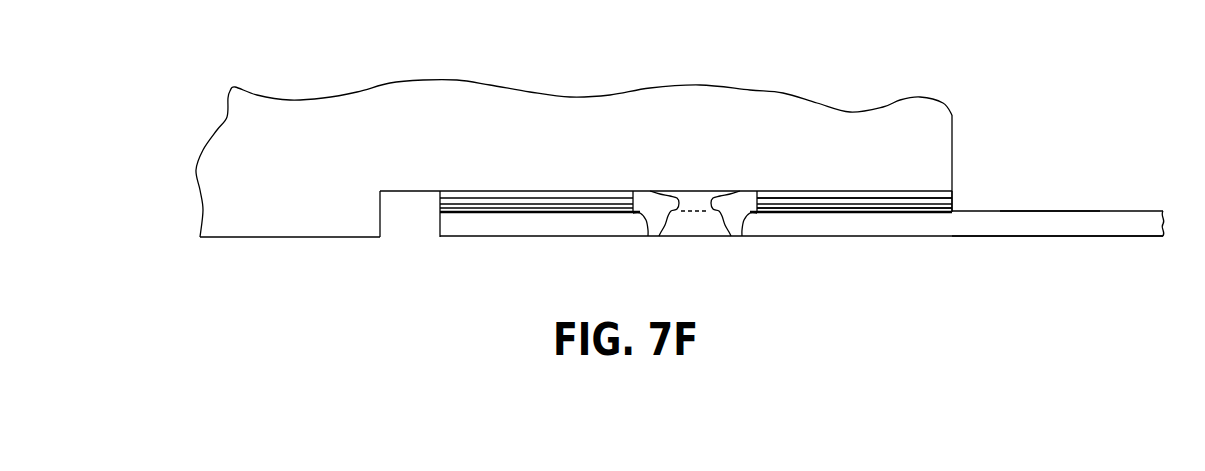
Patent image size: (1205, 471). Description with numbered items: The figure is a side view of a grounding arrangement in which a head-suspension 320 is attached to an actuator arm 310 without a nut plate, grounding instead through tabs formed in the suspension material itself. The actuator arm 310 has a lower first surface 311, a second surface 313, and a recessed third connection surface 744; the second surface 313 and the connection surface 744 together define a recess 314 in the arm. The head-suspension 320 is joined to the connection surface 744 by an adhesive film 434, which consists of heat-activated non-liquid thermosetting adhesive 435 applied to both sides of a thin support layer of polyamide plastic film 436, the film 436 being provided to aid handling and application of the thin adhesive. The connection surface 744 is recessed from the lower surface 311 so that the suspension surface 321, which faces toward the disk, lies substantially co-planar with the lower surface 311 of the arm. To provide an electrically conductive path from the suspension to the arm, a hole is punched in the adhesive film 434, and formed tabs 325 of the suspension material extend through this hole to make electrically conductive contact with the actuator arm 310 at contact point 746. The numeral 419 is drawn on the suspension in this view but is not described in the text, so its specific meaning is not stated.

The actuator arm 310 is at (344, 155).
The lower surface of arm 311 is at (278, 238).
The second surface 313 is at (382, 216).
The recess 314 is at (426, 198).
The connection surface 744 is at (408, 193).
The contact point 746 is at (659, 191).
The formed tabs 325 is at (727, 234).
The adhesive film 434 is at (862, 180).
The adhesive 435 is at (914, 190).
The support layer of polyamide plastic film 436 is at (955, 208).
The plate surface 419 is at (1058, 194).
The head-suspension 320 is at (1110, 192).
The surface of suspension 321 is at (1063, 237).